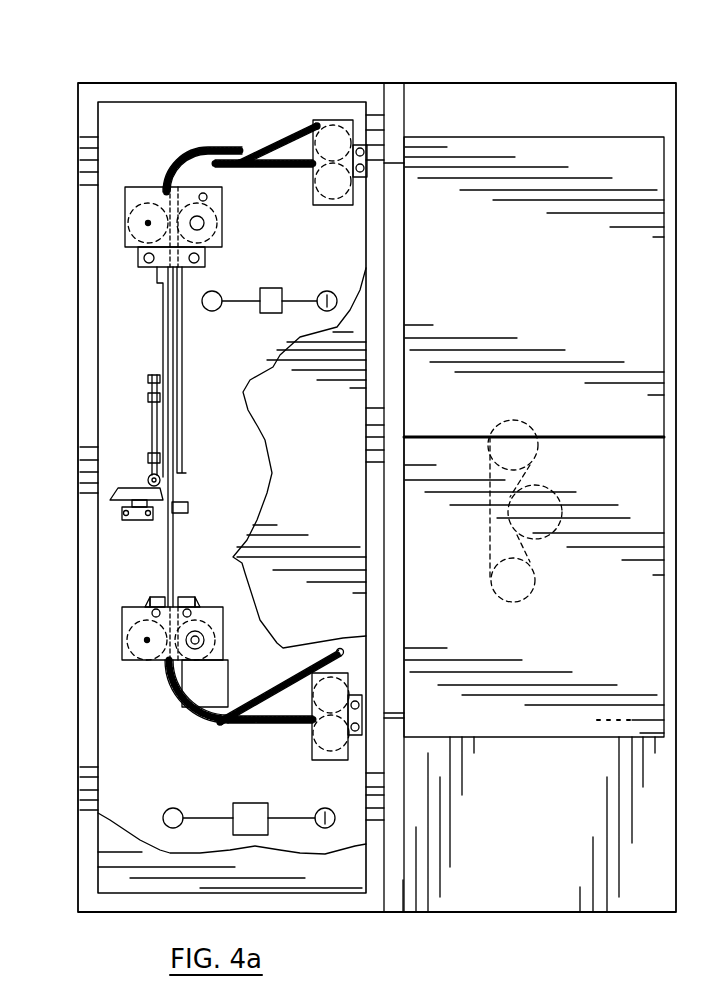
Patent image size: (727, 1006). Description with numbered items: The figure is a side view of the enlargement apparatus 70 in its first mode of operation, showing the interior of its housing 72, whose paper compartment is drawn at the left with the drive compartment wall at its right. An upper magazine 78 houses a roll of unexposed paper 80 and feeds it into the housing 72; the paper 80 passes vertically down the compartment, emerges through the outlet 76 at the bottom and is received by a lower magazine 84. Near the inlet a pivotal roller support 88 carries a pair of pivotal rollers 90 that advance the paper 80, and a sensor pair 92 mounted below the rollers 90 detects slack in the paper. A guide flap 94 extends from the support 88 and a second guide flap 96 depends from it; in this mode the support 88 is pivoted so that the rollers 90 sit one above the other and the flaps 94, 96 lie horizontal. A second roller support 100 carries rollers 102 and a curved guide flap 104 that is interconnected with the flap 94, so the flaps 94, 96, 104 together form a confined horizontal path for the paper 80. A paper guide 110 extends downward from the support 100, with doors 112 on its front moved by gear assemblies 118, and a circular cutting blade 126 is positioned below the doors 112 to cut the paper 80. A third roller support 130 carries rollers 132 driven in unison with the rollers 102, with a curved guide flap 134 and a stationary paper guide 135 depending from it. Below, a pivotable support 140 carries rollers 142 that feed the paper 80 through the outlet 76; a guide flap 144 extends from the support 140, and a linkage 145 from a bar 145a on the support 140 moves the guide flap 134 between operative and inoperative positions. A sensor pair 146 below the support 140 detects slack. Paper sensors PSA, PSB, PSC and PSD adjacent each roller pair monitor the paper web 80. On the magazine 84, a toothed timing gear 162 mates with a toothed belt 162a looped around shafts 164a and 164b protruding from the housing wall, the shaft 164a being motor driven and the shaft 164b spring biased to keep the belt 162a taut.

The enlargement apparatus 70 is at (124, 79).
The housing 72 is at (315, 96).
The outlet 76 is at (391, 722).
The magazine 78 is at (538, 152).
The paper 80 is at (397, 160).
The magazine 84 is at (655, 622).
The pivotal roller support 88 is at (338, 207).
The pivotal rollers 90 is at (323, 182).
The sensor pair 92 is at (272, 288).
The guide flap 94 is at (262, 143).
The second guide flap 96 is at (257, 168).
The second roller support 100 is at (148, 187).
The rollers 102 is at (214, 238).
The curved guide flap 104 is at (185, 155).
The paper guide 110 is at (183, 445).
The doors 112 is at (160, 313).
The gear assembly 118 is at (163, 482).
The circular cutting blade 126 is at (130, 488).
The third roller support 130 is at (130, 607).
The rollers 132 is at (207, 627).
The curved guide flap 134 is at (168, 687).
The stationary paper guide 135 is at (228, 688).
The pivotable support 140 is at (337, 761).
The rollers 142 is at (320, 735).
The guide flap 144 is at (293, 727).
The linkage 145 is at (308, 668).
The bar 145a is at (350, 653).
The sensor pair 146 is at (245, 803).
The toothed timing gear 162 is at (552, 500).
The toothed belt 162a is at (490, 527).
The shaft 164a is at (523, 580).
The shaft 164b is at (527, 453).
The paper sensor PSA is at (364, 108).
The paper sensor PSB is at (118, 258).
The paper sensor PSC is at (150, 597).
The paper sensor PSD is at (378, 700).